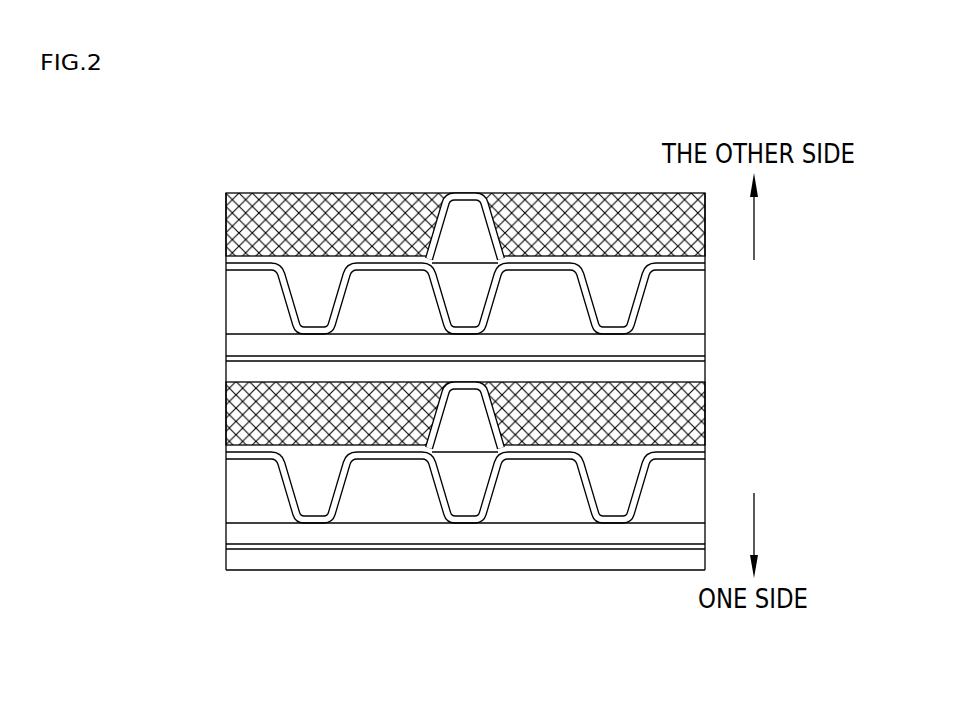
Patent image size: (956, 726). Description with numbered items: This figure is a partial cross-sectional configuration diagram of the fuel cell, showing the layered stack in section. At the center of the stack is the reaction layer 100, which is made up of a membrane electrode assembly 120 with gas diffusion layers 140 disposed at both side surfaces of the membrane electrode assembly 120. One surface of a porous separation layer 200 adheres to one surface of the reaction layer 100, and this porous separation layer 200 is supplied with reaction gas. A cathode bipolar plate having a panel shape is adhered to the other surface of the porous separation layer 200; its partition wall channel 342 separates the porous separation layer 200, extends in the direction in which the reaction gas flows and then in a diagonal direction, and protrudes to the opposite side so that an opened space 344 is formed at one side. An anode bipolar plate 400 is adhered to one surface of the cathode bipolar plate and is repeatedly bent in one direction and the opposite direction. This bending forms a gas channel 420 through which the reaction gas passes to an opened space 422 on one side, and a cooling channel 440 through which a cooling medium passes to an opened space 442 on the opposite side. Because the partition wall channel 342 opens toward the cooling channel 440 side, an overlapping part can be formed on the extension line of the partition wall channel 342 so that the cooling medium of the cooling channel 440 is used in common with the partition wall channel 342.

The reaction layer 100 is at (378, 374).
The membrane electrode assembly 120 is at (258, 357).
The gas diffusion layer 140 is at (243, 371).
The porous separation layer 200 is at (318, 223).
The partition wall channel 342 is at (622, 417).
The opened space 344 is at (463, 219).
The anode bipolar plate 400 is at (465, 580).
The gas channel 420 is at (607, 556).
The opened space 422 is at (413, 229).
The cooling channel 440 is at (465, 559).
The opened space 442 is at (472, 310).